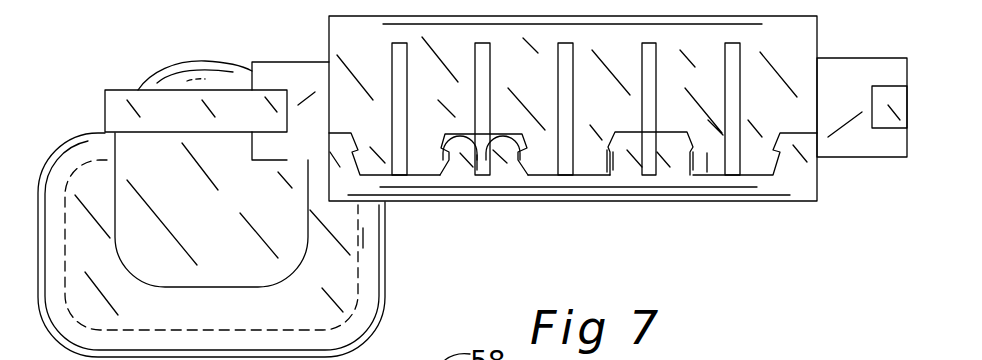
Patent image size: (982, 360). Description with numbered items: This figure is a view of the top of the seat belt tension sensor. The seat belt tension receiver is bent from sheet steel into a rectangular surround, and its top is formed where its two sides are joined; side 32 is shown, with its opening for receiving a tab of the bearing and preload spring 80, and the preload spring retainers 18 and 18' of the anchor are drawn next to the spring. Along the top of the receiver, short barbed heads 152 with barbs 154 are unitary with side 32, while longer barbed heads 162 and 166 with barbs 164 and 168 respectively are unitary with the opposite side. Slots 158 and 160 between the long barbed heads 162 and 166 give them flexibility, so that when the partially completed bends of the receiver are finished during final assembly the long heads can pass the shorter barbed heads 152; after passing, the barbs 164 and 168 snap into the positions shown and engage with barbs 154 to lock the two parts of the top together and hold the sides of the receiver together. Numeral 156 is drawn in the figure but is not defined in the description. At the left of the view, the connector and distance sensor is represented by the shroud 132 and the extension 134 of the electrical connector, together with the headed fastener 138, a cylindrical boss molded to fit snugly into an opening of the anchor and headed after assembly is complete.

The preload spring retainer 18 is at (857, 173).
The preload spring retainer 18' is at (196, 111).
The side 32 is at (393, 202).
The bearing and preload spring 80 is at (322, 153).
The shroud 132 is at (235, 323).
The extension 134 is at (223, 224).
The headed fastener 138 is at (158, 74).
The short barbed head 152 is at (463, 152).
The barb 154 is at (477, 165).
The second lobe 156 is at (494, 152).
The slot 158 is at (651, 122).
The slot 160 is at (561, 158).
The long barbed head 162 is at (593, 155).
The barb 164 is at (612, 152).
The long barbed head 166 is at (707, 153).
The barb 168 is at (692, 153).